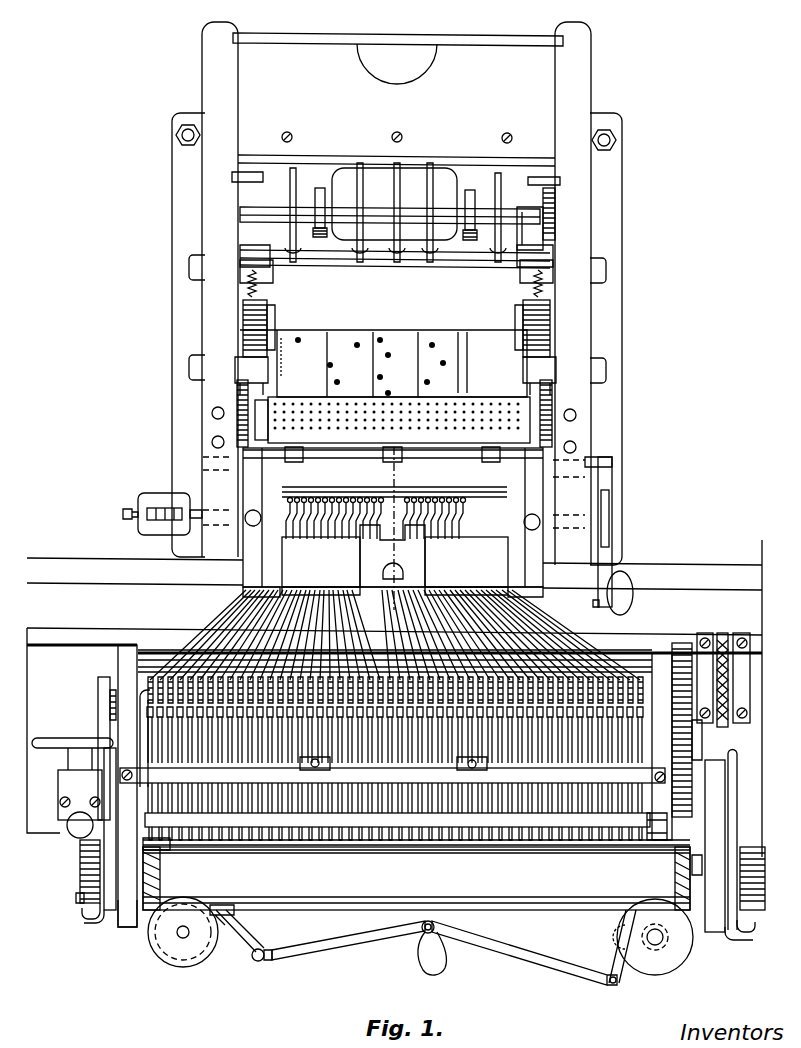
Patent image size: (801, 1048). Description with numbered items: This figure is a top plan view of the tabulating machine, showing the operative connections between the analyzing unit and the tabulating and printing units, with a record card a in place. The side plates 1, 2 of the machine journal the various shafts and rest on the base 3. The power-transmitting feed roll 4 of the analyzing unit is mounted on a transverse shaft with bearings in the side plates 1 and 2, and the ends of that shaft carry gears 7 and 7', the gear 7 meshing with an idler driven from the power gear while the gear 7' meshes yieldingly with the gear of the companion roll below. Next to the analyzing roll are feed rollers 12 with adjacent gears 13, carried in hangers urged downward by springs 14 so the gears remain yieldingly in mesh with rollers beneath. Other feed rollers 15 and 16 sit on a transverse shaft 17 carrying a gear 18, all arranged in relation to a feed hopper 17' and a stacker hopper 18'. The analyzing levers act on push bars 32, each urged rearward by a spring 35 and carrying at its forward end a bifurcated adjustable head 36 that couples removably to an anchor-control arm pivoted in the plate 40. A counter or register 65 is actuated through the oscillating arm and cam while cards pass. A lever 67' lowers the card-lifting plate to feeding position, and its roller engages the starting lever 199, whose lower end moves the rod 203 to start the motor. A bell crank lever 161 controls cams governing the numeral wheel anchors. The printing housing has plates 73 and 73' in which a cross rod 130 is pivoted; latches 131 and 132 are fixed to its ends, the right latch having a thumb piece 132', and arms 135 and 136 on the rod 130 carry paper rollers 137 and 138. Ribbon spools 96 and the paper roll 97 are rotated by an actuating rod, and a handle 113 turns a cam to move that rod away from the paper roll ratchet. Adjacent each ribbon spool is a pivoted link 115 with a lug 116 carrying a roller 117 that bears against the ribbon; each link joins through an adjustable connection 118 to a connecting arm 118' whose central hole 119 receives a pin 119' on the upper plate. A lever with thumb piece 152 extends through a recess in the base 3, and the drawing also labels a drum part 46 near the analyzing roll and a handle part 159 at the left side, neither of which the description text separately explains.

The side plate 1 is at (210, 84).
The side plate 2 is at (583, 82).
The stacker hopper 18' is at (398, 45).
The feed roller 15 is at (320, 192).
The transverse shaft 17 is at (390, 174).
The feed roller 16 is at (470, 193).
The gear 18 is at (590, 219).
The spring 14 is at (258, 290).
The feed roller 12 is at (265, 315).
The gear 13 is at (240, 320).
The base 3 is at (458, 869).
The record card a is at (397, 330).
The perforated drum 46 is at (286, 392).
The gear 7' is at (190, 452).
The gear 7 is at (596, 454).
The counter 65 is at (152, 497).
The starting lever 199 is at (605, 512).
The lever 67' is at (632, 532).
The rod 203 is at (623, 592).
The feed hopper 17' is at (353, 556).
The spring 35 is at (172, 658).
The push bar 32 is at (518, 622).
The bifurcated adjustable head 36 is at (563, 710).
The plate 40 is at (125, 663).
The bell crank lever 161 is at (105, 718).
The handle 159 is at (65, 765).
The thumb piece 152 is at (67, 833).
The latch 131 is at (108, 832).
The handle 113 is at (78, 900).
The plate 73 is at (125, 938).
The arm 135 is at (160, 843).
The paper roller 137 is at (160, 863).
The cross rod 130 is at (302, 827).
The feed roll 4 is at (350, 625).
The pin 119' is at (418, 897).
The hole 119 is at (479, 893).
The paper roll 97 is at (575, 880).
The arm 136 is at (687, 823).
The paper roller 138 is at (680, 850).
The latch 132 is at (742, 828).
The lug 116 is at (247, 918).
The roller 117 is at (225, 957).
The link 115 is at (245, 950).
The adjustable connection 118 is at (285, 972).
The connecting arm 118' is at (444, 953).
The ribbon spool 96 is at (658, 970).
The plate 73' is at (708, 873).
The thumb piece 132' is at (752, 945).